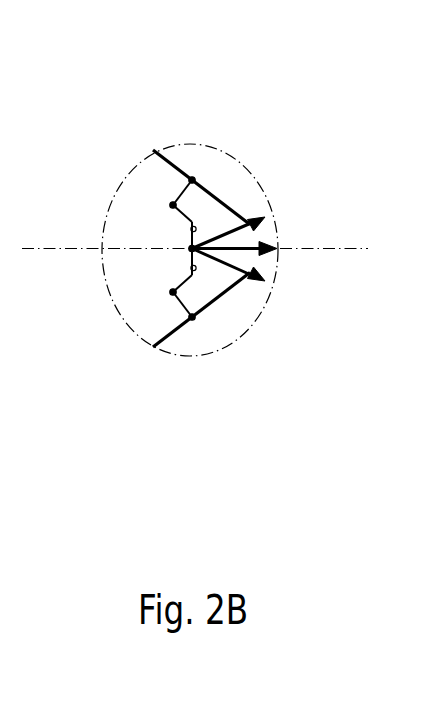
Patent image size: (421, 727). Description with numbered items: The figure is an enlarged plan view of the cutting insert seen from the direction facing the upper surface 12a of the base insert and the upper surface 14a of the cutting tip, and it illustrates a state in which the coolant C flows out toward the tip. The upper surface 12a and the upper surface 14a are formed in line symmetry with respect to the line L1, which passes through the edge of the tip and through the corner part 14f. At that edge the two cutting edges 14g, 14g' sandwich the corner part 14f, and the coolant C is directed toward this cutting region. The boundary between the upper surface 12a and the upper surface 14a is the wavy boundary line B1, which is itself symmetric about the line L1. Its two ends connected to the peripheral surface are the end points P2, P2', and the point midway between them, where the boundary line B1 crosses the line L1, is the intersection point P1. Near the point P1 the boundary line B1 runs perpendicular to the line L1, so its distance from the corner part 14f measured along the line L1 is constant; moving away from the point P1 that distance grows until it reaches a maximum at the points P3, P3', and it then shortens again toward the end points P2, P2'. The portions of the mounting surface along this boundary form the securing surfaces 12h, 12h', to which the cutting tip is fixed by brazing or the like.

The upper surface 12a is at (155, 180).
The securing surface 12h is at (188, 130).
The securing surface 12h' is at (163, 344).
The upper surface 14a is at (234, 229).
The corner part 14f is at (277, 244).
The cutting edge 14g is at (205, 168).
The cutting edge 14g' is at (230, 315).
The boundary line B1 is at (181, 213).
The coolant C is at (272, 283).
The line L1 is at (323, 250).
The intersection point P1 is at (188, 250).
The end point P2 is at (226, 123).
The end point P2' is at (225, 361).
The point of maximum distance P3 is at (132, 163).
The point of maximum distance P3' is at (124, 309).